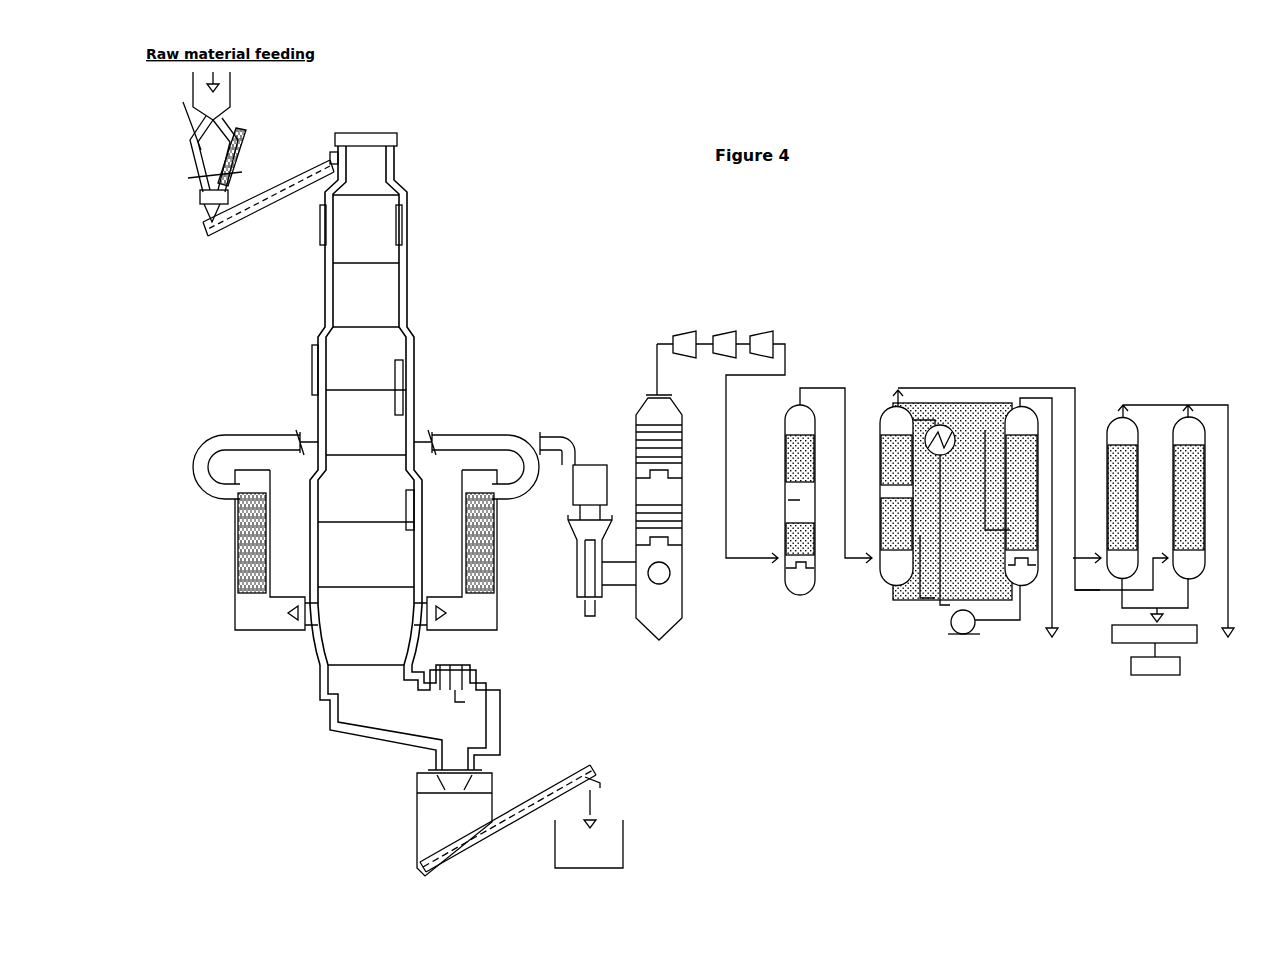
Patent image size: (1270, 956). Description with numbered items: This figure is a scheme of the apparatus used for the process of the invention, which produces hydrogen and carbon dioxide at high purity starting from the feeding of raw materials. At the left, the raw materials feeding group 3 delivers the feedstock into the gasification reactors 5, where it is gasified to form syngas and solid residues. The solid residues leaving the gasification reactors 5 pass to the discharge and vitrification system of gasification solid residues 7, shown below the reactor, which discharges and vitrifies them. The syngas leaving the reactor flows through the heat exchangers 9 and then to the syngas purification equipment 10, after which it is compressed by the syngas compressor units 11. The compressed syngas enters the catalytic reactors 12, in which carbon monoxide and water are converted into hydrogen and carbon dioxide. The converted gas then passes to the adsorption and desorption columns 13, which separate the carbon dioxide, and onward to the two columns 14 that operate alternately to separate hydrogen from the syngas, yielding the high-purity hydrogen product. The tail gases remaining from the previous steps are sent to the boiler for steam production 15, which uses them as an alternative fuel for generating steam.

The raw materials feeding group 3 is at (216, 119).
The gasification reactors 5 is at (420, 378).
The discharge and vitrification system of gasification solid residues 7 is at (494, 686).
The heat exchangers 9 is at (236, 545).
The syngas purification equipment 10 is at (636, 452).
The syngas compressor units 11 is at (757, 330).
The catalytic reactors 12 is at (811, 382).
The adsorption and desorption columns 13 is at (1022, 387).
The two columns alternately operating H2 separation 14 is at (1190, 403).
The boiler for steam production 15 is at (1159, 675).